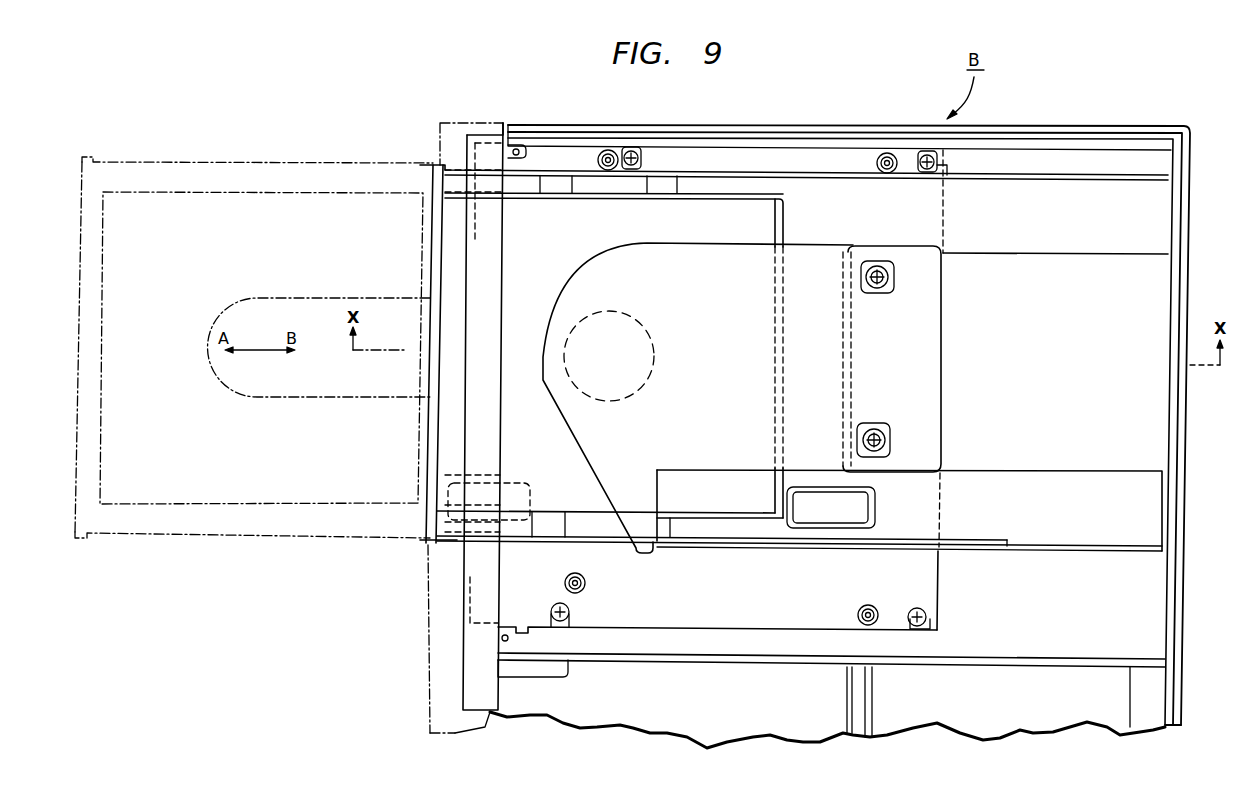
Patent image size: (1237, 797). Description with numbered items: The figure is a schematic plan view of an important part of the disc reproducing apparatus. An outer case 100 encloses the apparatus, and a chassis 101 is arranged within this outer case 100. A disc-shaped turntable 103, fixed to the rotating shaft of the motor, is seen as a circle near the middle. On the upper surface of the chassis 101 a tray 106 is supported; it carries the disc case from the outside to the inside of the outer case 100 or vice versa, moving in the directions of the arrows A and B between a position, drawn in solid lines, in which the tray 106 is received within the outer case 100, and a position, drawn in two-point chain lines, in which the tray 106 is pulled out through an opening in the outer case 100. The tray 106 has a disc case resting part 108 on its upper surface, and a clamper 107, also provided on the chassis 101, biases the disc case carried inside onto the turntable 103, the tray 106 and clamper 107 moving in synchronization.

The outer case 100 is at (758, 127).
The chassis 101 is at (667, 630).
The turntable 103 is at (613, 402).
The tray 106 is at (668, 172).
The clamper 107 is at (832, 245).
The disc case resting part 108 is at (547, 215).